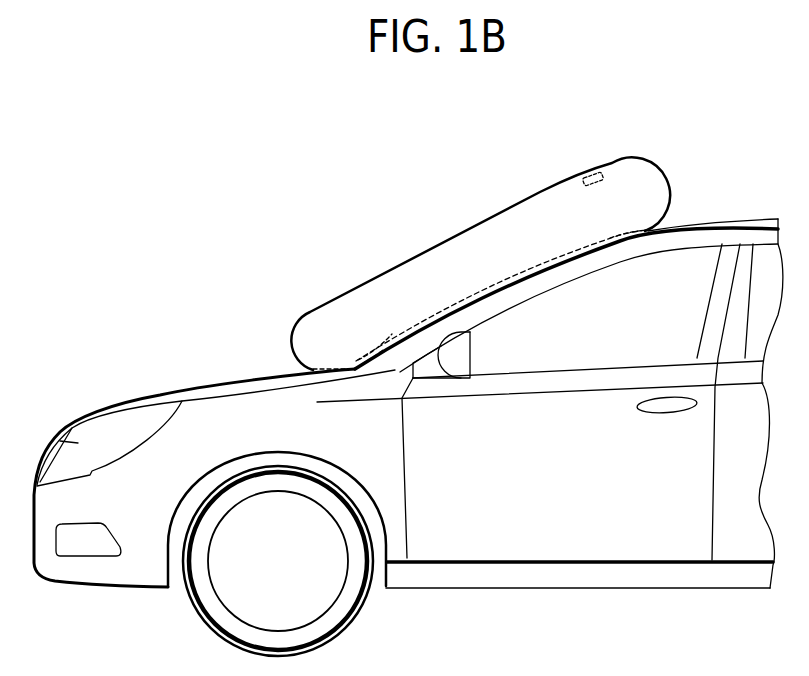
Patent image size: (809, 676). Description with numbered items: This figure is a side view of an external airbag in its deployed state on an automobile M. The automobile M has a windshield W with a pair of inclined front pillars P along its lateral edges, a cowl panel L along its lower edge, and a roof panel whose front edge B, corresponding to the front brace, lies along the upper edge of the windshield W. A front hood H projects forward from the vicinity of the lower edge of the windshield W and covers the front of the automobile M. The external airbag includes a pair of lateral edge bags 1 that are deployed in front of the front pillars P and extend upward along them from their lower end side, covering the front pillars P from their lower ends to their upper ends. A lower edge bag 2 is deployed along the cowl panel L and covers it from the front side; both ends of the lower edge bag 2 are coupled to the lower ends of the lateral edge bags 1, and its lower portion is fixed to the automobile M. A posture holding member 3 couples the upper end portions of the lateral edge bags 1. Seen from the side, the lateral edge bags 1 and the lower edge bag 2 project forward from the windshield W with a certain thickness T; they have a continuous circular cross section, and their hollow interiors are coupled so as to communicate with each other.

The lateral edge bag 1 is at (458, 234).
The lower edge bag 2 is at (372, 352).
The posture holding member 3 is at (588, 173).
The cowl panel L is at (374, 350).
The windshield W is at (546, 258).
The front pillar P is at (596, 252).
The front edge of roof panel B is at (621, 228).
The automobile M is at (745, 220).
The front hood H is at (200, 387).
The thickness T is at (463, 232).